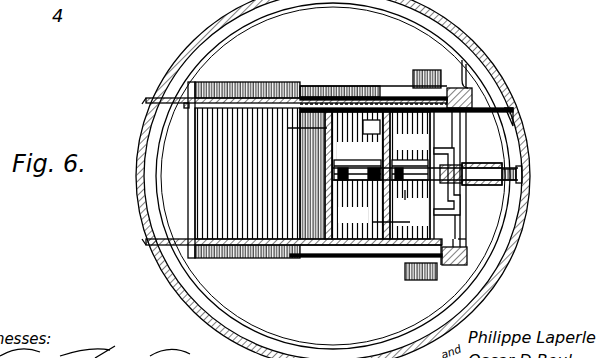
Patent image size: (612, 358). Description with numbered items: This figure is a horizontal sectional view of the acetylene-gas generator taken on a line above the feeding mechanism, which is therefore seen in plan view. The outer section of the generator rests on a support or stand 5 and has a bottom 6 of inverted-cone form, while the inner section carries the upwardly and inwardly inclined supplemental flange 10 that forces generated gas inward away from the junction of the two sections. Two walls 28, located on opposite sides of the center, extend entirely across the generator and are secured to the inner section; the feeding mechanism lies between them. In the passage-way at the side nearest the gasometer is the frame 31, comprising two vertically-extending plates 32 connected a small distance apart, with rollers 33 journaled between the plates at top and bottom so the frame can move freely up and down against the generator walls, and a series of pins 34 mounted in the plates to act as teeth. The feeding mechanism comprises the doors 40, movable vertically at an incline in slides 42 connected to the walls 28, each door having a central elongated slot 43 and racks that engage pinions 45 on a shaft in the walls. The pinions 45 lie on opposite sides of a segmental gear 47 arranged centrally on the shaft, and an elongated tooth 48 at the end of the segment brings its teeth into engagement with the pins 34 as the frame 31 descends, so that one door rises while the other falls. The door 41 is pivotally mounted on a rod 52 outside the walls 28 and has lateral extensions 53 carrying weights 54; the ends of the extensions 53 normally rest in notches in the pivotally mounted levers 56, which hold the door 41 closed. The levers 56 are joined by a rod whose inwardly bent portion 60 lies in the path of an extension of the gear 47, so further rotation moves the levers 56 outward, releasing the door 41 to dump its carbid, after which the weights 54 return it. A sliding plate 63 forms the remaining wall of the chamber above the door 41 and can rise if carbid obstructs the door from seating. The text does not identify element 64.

The support or stand 5 is at (187, 302).
The bottom 6 is at (333, 176).
The supplemental flange 10 is at (137, 142).
The walls 28 is at (241, 98).
The frame 31 is at (508, 165).
The plates 32 is at (530, 180).
The rollers 33 is at (530, 203).
The pins 34 is at (500, 166).
The doors 40 is at (379, 175).
The door 41 is at (260, 173).
The slides 42 is at (420, 102).
The elongated slot 43 is at (477, 137).
The pinions 45 is at (345, 178).
The segmental gear 47 is at (472, 219).
The elongated tooth 48 is at (477, 229).
The rod 52 is at (301, 247).
The extensions 53 is at (402, 256).
The weights 54 is at (432, 72).
The levers 56 is at (472, 97).
The bent portion 60 is at (405, 202).
The sliding plate 63 is at (195, 160).
The lever 64 is at (458, 173).